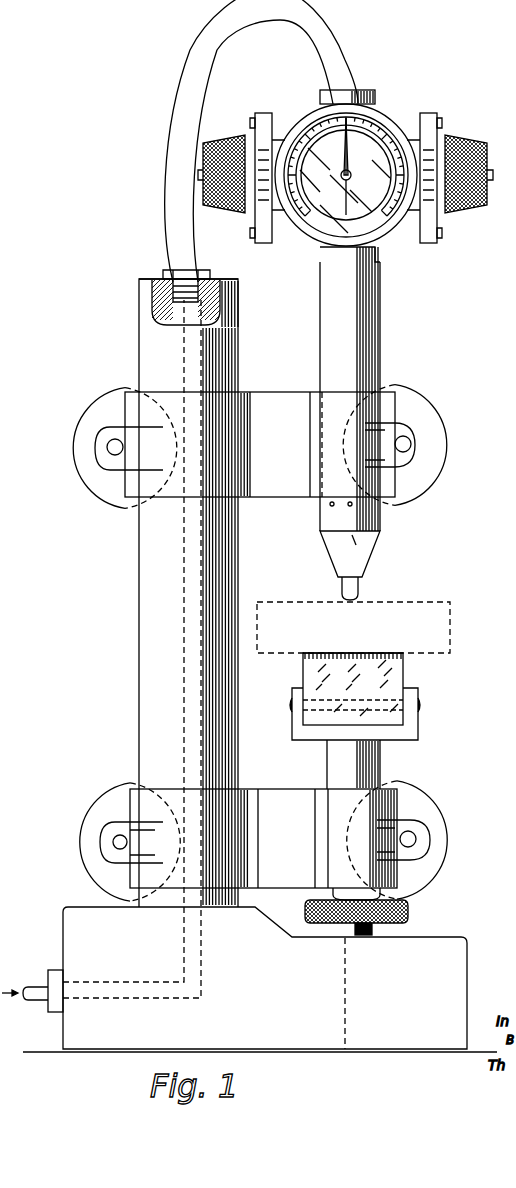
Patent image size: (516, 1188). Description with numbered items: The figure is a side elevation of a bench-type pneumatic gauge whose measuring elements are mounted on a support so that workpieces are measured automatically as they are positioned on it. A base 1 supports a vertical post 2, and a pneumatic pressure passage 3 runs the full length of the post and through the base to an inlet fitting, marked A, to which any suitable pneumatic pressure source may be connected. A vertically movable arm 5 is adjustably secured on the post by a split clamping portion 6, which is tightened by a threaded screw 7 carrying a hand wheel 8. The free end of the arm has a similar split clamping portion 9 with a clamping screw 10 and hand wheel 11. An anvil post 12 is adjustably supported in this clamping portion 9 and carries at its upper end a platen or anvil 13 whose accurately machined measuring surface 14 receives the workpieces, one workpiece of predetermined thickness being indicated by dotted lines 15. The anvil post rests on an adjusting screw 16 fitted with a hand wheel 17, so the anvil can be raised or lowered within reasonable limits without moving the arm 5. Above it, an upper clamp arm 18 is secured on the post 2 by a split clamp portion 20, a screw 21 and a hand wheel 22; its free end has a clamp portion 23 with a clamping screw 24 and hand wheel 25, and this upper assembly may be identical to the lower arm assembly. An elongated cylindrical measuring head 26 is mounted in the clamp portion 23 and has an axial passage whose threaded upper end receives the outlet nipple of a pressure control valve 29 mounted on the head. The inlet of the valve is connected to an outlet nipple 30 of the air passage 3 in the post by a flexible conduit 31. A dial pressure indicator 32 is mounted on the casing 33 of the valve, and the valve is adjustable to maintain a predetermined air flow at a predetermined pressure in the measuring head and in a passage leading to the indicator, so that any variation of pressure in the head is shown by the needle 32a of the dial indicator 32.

The base 1 is at (190, 1035).
The fluid inlet fitting A is at (35, 988).
The vertical post 2 is at (155, 658).
The pneumatic pressure passage 3 is at (184, 735).
The vertically movable arm 5 is at (277, 797).
The split clamping portion 6 is at (245, 788).
The threaded screw 7 is at (113, 845).
The hand wheel 8 is at (62, 829).
The split clamping portion 9 is at (347, 800).
The clamping screw 10 is at (413, 833).
The hand wheel 11 is at (468, 843).
The anvil post 12 is at (363, 755).
The platen or anvil 13 is at (398, 677).
The measuring surface 14 is at (373, 652).
The workpiece 15 is at (452, 607).
The adjusting screw 16 is at (372, 928).
The hand wheel 17 is at (408, 907).
The upper clamp arm 18 is at (275, 397).
The split clamp portion 20 is at (207, 417).
The screw 21 is at (106, 450).
The hand wheel 22 is at (88, 410).
The clamp portion 23 is at (365, 397).
The clamping screw 24 is at (410, 440).
The hand wheel 25 is at (428, 395).
The measuring head 26 is at (378, 310).
The pressure control valve 29 is at (407, 228).
The outlet nipple 30 is at (167, 277).
The flexible conduit 31 is at (183, 68).
The dial pressure indicator 32 is at (377, 143).
The needle 32a is at (367, 133).
The casing 33 is at (412, 120).